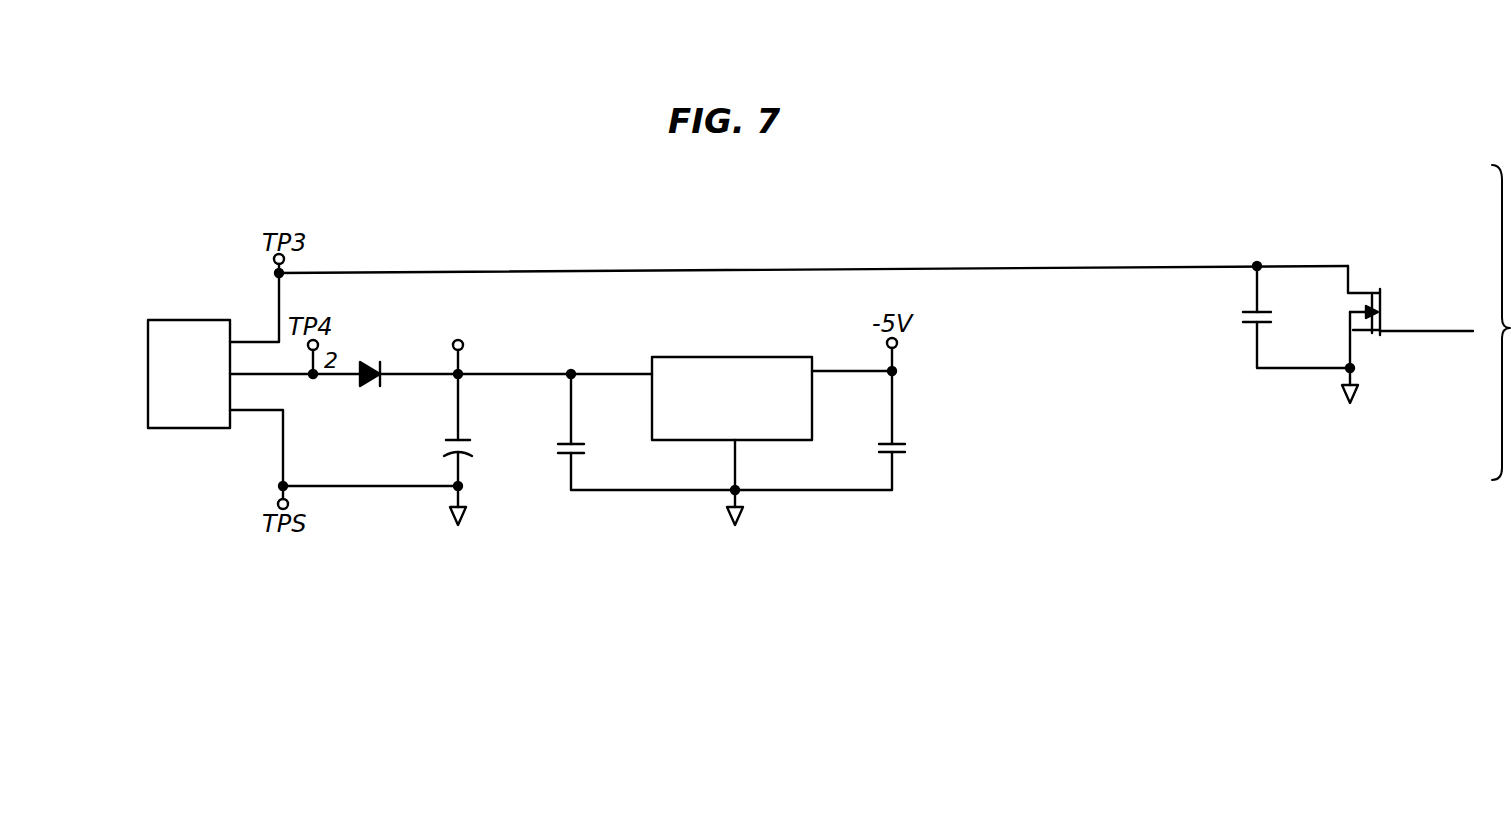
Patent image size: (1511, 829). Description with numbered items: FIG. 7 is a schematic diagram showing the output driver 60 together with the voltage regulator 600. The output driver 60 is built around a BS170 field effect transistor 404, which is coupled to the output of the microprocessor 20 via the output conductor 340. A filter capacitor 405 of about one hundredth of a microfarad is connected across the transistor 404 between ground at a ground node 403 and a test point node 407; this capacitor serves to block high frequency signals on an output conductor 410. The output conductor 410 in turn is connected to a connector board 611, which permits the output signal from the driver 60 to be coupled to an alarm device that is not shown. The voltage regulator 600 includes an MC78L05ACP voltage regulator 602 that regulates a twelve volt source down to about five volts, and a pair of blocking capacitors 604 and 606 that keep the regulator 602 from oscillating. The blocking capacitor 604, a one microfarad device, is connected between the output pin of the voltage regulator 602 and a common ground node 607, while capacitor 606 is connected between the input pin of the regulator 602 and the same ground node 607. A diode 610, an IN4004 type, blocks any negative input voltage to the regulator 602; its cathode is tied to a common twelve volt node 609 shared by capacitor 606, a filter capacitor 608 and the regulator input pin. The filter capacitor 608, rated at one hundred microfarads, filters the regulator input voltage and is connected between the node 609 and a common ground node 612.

The output driver 60 is at (1128, 241).
The microprocessor 20 is at (1498, 165).
The output conductor 340 is at (1408, 333).
The ground node 403 is at (1350, 368).
The field effect transistor 404 is at (1385, 292).
The filter capacitor 405 is at (1252, 312).
The test point node 407 is at (1257, 266).
The output conductor 410 is at (937, 269).
The voltage regulator 600 is at (356, 536).
The voltage regulator 602 is at (812, 405).
The blocking capacitor 604 is at (892, 444).
The blocking capacitor 606 is at (567, 455).
The common ground node 607 is at (737, 491).
The filter capacitor 608 is at (452, 440).
The common 12 volt node 609 is at (460, 373).
The diode 610 is at (360, 370).
The connector board 611 is at (193, 320).
The common ground node 612 is at (462, 487).